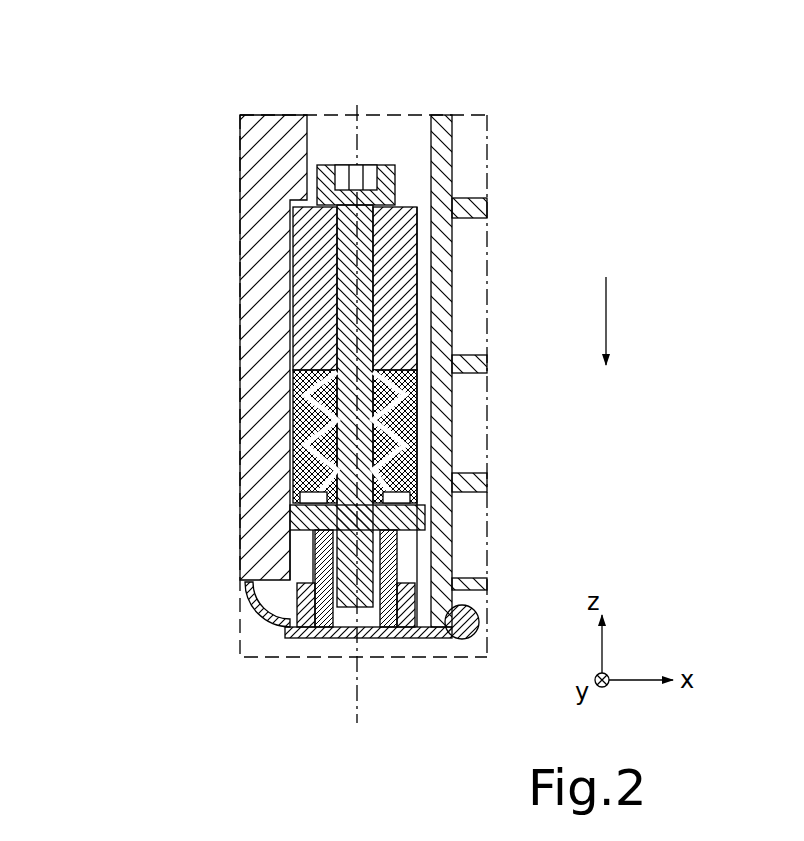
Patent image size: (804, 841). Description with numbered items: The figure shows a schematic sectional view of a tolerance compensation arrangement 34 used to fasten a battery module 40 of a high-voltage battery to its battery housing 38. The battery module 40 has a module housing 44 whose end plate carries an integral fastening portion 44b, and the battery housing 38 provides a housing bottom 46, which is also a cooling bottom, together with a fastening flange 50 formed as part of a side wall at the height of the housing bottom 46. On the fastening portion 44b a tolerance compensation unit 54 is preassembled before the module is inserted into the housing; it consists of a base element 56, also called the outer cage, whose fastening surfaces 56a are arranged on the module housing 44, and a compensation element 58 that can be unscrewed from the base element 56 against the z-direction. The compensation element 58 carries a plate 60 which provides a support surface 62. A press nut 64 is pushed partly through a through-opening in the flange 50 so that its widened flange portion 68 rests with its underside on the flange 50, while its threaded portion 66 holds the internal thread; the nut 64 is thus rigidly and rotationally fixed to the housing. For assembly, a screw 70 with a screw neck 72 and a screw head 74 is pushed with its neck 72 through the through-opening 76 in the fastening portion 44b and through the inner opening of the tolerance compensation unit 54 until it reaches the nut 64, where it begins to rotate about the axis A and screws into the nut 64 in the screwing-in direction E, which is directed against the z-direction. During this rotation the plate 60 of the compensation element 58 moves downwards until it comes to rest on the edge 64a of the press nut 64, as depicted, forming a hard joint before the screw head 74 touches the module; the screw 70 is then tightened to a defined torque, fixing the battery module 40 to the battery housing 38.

The tolerance compensation arrangement 34 is at (503, 148).
The battery housing 38 is at (480, 355).
The battery module 40 is at (212, 307).
The module housing 44 is at (258, 160).
The fastening portion 44b is at (302, 232).
The housing bottom 46 is at (285, 636).
The fastening flange 50 is at (440, 606).
The tolerance compensation unit 54 is at (351, 417).
The base element 56 is at (357, 401).
The fastening surfaces 56a is at (365, 401).
The compensation element 58 is at (392, 472).
The plate 60 is at (415, 512).
The support surface 62 is at (352, 575).
The press nut 64 is at (272, 584).
The edge 64a is at (397, 540).
The threaded portion 66 is at (315, 598).
The flange portion 68 is at (226, 661).
The screw 70 is at (446, 386).
The screw neck 72 is at (360, 353).
The screw head 74 is at (371, 334).
The through-opening 76 is at (371, 386).
The axis A is at (357, 704).
The screwing-in direction E is at (606, 310).